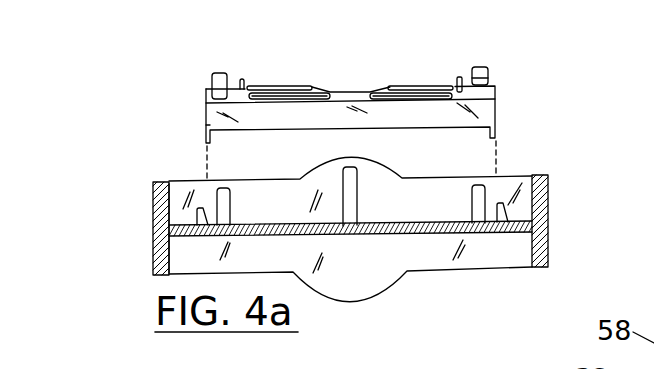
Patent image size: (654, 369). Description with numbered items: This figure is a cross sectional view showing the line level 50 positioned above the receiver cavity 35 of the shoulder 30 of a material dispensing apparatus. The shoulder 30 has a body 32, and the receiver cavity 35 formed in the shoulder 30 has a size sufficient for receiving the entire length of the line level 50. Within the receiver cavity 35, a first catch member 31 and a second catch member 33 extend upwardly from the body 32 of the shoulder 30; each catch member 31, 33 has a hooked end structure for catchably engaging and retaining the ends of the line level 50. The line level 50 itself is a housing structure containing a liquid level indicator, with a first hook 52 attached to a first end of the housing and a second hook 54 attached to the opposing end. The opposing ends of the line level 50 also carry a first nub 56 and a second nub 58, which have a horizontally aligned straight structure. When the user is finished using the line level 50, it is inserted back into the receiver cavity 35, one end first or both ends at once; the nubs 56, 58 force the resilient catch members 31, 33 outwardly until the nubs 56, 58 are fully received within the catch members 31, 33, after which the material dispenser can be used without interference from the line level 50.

The shoulder 30 is at (548, 238).
The first catch member 31 is at (507, 217).
The body 32 is at (410, 237).
The second catch member 33 is at (195, 220).
The receiver cavity 35 is at (177, 192).
The line level 50 is at (303, 82).
The first hook 52 is at (213, 72).
The second hook 54 is at (486, 67).
The first nub 56 is at (497, 126).
The second nub 58 is at (205, 127).